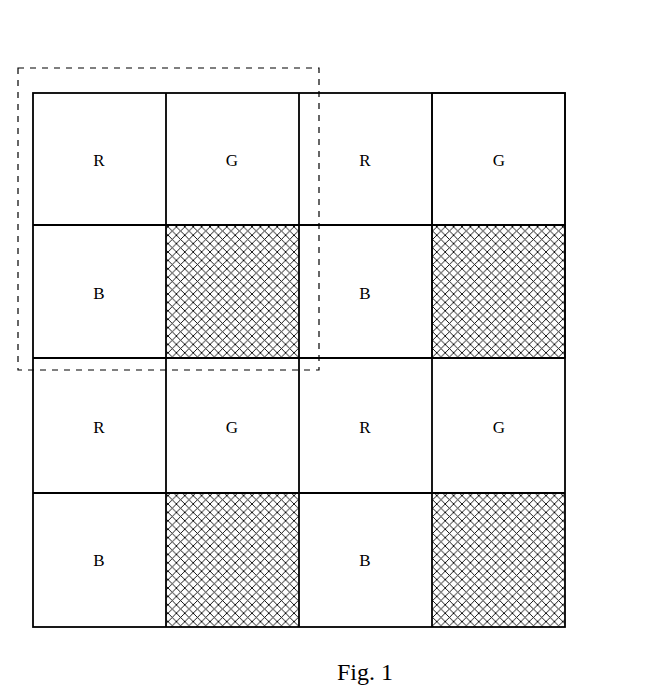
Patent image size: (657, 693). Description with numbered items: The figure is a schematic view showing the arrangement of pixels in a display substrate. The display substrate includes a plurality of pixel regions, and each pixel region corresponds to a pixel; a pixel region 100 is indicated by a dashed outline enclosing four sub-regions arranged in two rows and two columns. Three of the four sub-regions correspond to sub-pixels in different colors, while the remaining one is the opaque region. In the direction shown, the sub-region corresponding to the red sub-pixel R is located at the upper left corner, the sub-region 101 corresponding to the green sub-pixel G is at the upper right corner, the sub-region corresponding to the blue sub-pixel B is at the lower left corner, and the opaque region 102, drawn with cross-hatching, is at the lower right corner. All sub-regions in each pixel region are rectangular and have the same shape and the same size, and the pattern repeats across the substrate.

The pixel unit 100 is at (250, 68).
The sub-pixel 101 is at (490, 122).
The transparent region 102 is at (576, 297).